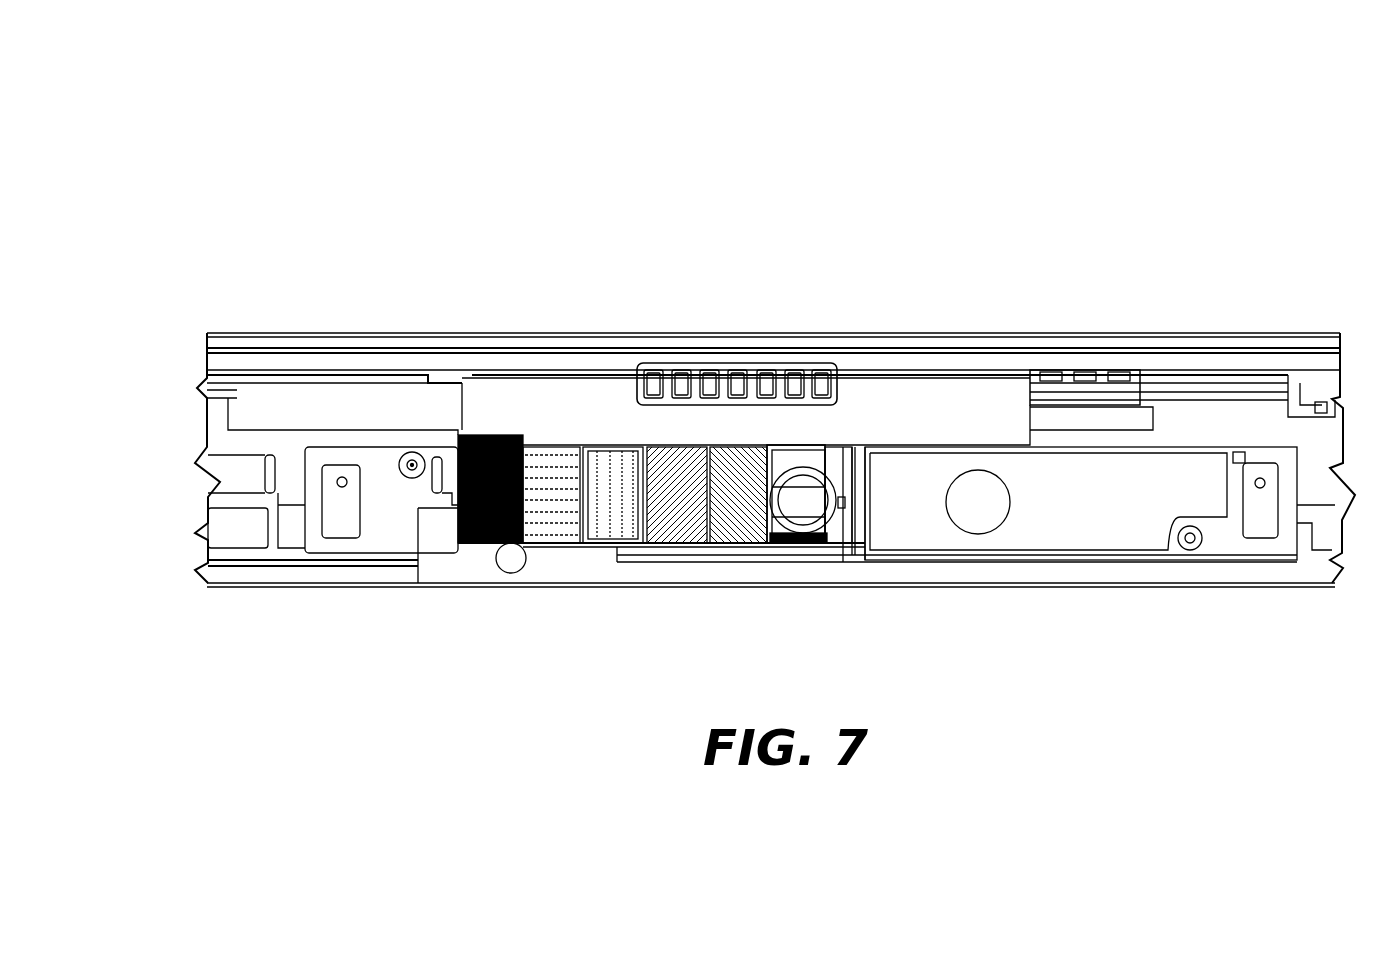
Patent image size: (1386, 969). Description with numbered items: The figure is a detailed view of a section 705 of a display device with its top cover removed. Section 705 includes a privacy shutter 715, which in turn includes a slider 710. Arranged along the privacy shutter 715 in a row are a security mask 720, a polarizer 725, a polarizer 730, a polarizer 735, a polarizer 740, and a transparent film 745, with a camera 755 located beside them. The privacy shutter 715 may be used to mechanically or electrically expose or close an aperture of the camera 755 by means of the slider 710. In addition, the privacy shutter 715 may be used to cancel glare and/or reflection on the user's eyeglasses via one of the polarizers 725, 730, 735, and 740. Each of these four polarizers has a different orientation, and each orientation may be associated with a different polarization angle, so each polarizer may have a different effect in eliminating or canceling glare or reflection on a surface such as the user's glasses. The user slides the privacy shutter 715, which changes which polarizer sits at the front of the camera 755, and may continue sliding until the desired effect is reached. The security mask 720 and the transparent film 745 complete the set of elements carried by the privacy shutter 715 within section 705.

The section 705 is at (207, 95).
The slider 710 is at (727, 362).
The privacy shutter 715 is at (908, 378).
The security mask 720 is at (465, 543).
The polarizer 725 is at (533, 543).
The polarizer 730 is at (598, 543).
The polarizer 735 is at (657, 543).
The polarizer 740 is at (718, 545).
The transparent film 745 is at (782, 548).
The camera 755 is at (832, 522).